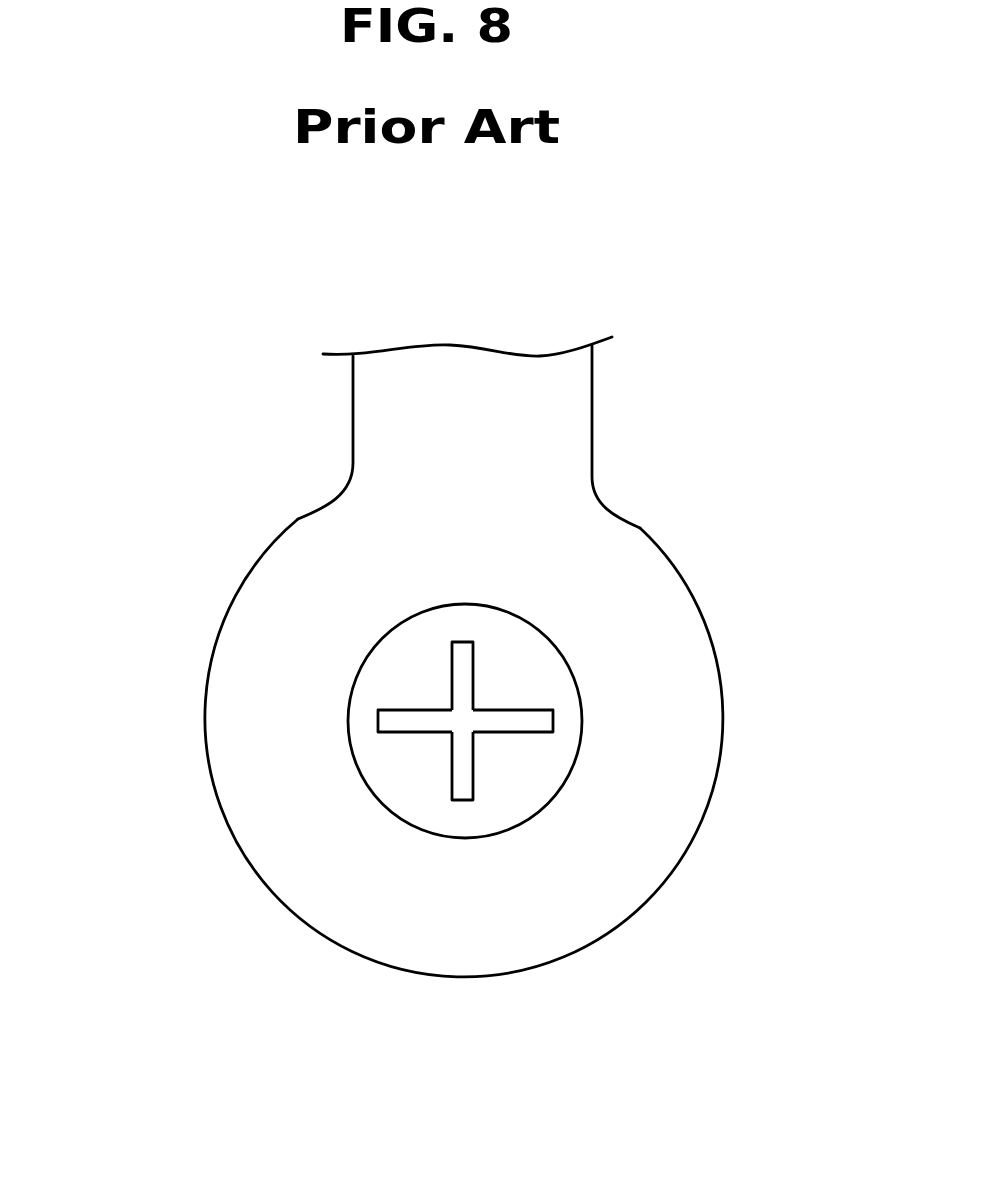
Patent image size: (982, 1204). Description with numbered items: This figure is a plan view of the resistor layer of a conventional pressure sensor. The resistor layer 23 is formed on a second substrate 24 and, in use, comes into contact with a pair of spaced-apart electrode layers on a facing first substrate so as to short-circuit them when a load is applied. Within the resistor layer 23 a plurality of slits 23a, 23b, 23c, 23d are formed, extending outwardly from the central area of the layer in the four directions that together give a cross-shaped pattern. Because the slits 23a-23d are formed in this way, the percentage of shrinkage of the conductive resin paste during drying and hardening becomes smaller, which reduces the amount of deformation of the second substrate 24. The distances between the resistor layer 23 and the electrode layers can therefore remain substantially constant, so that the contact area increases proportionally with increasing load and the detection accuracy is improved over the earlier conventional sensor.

The second substrate 24 is at (620, 540).
The resistor layer 23 is at (537, 672).
The slit 23a is at (543, 725).
The slit 23b is at (467, 778).
The slit 23c is at (390, 720).
The slit 23d is at (463, 650).